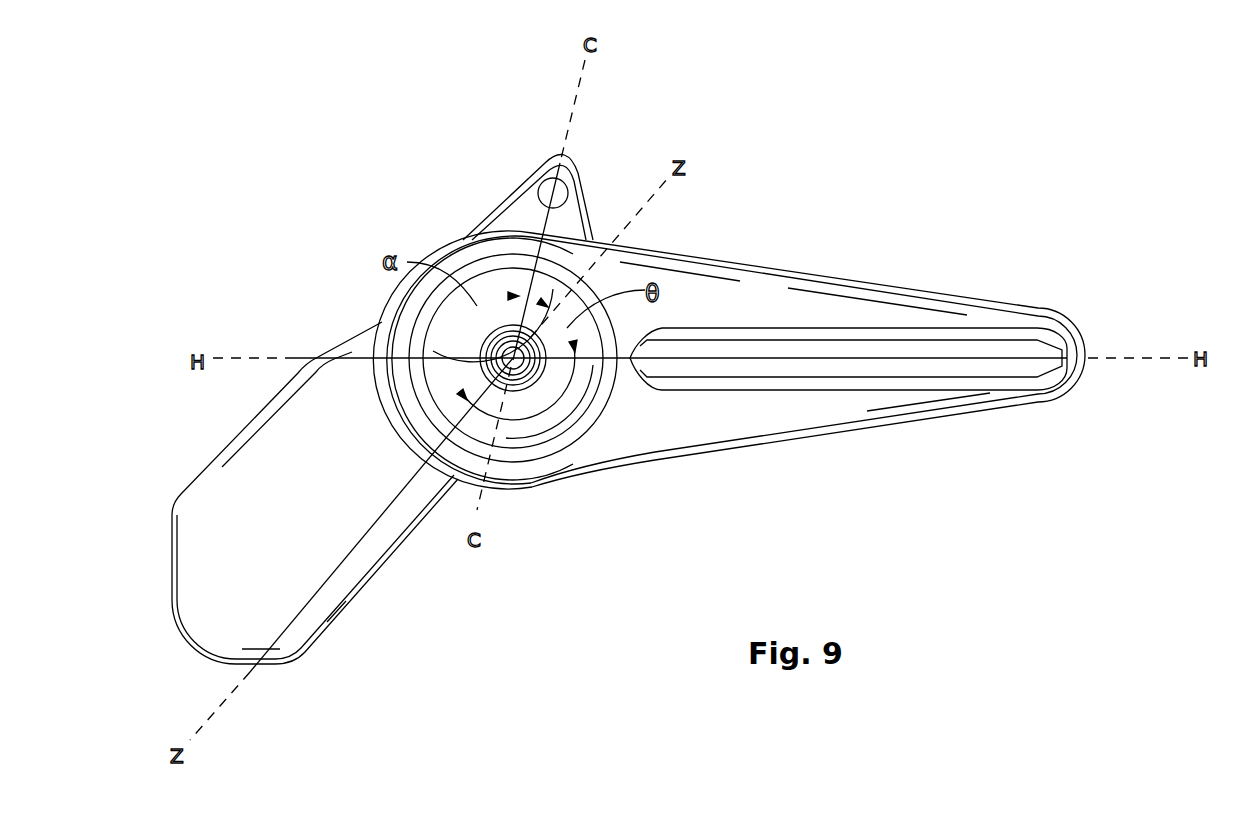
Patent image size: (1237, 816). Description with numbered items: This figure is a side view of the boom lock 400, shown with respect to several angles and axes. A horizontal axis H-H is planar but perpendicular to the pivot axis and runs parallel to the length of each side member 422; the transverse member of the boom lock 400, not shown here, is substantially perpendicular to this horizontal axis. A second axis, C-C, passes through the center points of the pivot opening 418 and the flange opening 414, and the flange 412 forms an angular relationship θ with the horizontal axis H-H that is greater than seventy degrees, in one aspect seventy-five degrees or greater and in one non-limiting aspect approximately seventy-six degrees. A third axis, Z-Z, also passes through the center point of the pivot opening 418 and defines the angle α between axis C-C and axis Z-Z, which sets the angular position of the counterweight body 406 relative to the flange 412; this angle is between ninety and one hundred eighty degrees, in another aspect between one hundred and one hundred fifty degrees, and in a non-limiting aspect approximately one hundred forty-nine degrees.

The boom lock 400 is at (856, 140).
The counterweight body 406 is at (198, 558).
The flange 412 is at (505, 197).
The flange opening 414 is at (565, 185).
The pivot opening 418 is at (519, 370).
The side member 422 is at (795, 428).